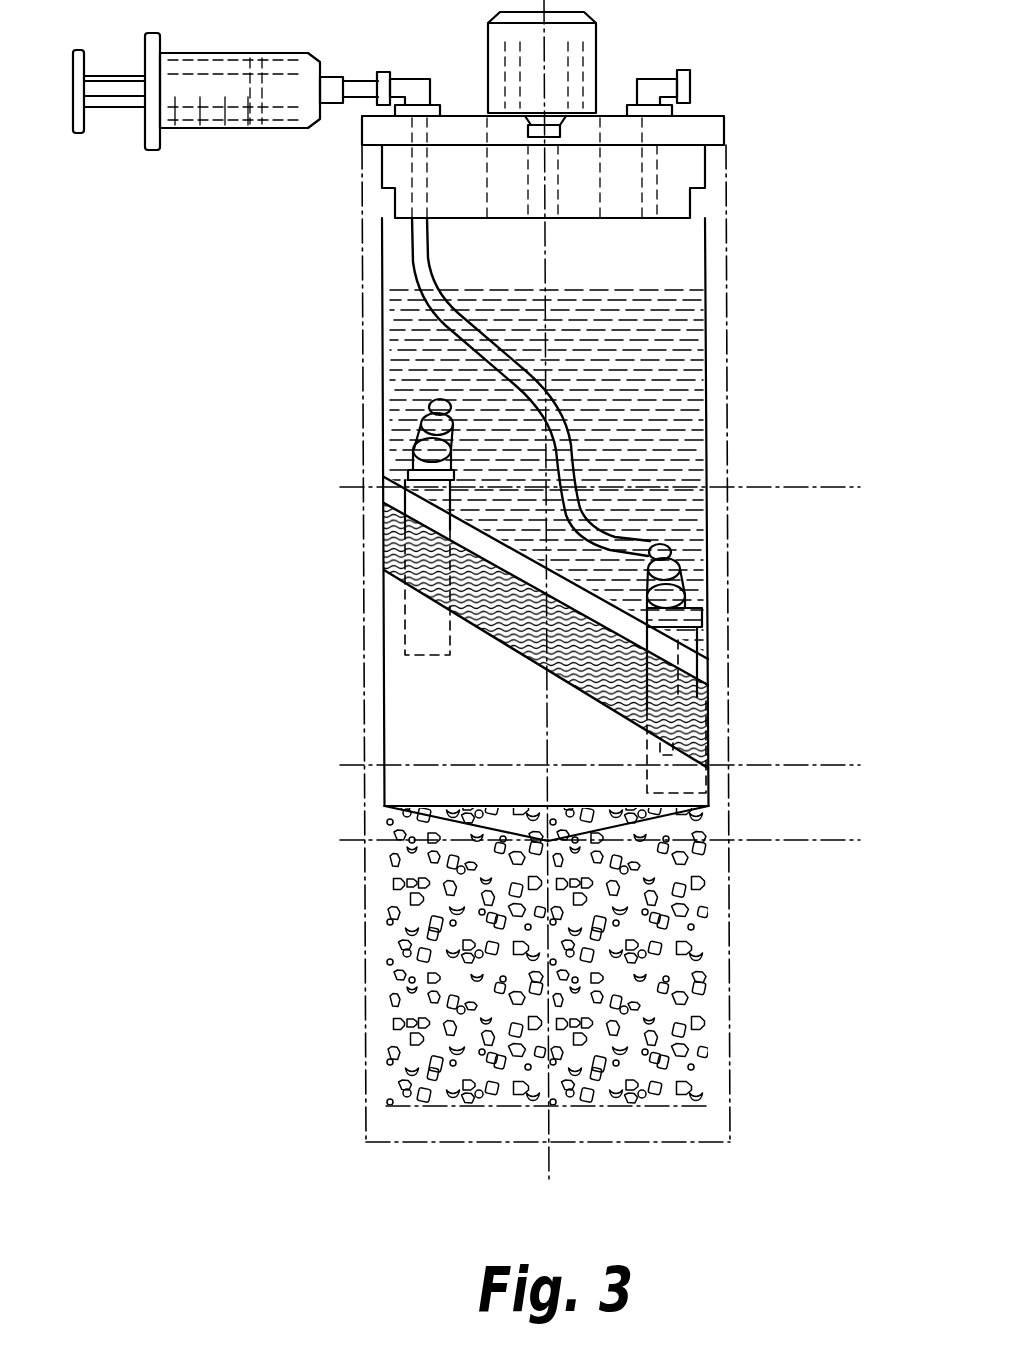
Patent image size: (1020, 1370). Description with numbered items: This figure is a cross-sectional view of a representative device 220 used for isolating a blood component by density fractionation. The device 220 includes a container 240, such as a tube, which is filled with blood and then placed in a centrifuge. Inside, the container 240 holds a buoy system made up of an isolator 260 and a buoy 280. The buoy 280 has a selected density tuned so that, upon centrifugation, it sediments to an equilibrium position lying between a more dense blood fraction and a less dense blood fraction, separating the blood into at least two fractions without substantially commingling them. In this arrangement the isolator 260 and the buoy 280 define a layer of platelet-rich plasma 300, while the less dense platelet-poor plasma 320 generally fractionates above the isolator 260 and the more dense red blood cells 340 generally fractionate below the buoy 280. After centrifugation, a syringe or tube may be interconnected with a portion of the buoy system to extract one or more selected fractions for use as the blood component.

The device 220 is at (765, 160).
The container 240 is at (726, 298).
The isolator 260 is at (385, 498).
The buoy 280 is at (402, 784).
The platelet-rich plasma 300 is at (613, 687).
The platelet-poor plasma 320 is at (665, 434).
The red blood cells 340 is at (672, 995).